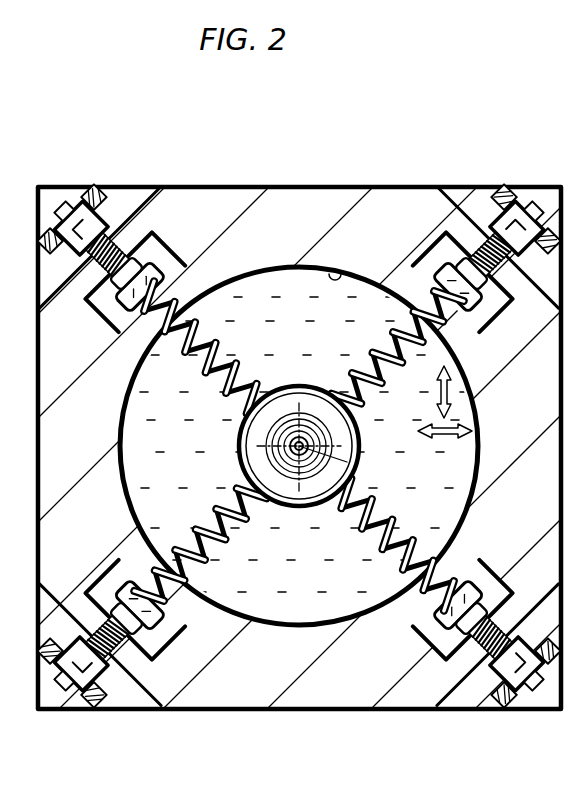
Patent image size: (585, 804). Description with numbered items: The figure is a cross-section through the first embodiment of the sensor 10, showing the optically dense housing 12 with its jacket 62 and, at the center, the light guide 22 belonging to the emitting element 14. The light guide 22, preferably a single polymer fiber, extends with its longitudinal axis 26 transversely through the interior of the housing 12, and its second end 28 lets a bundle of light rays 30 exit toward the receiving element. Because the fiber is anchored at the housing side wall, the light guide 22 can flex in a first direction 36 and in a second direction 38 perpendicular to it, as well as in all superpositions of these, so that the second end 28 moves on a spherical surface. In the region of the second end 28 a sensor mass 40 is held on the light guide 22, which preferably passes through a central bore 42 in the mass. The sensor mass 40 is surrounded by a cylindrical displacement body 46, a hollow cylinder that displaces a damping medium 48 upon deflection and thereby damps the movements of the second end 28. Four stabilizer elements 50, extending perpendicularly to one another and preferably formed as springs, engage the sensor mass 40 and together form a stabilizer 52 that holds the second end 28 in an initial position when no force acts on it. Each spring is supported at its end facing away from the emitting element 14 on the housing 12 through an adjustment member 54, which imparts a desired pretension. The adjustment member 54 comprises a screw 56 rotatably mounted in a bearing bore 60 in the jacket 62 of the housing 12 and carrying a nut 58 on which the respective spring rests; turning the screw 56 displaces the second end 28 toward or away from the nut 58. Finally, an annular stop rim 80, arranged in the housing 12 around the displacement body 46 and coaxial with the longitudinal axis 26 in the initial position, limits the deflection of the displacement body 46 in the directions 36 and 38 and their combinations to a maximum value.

The sensor 10 is at (362, 147).
The housing 12 is at (453, 170).
The emitting element 14 is at (292, 513).
The light guide 22 is at (347, 462).
The longitudinal axis 26 is at (243, 438).
The second end 28 is at (312, 392).
The bundle of light rays 30 is at (290, 452).
The first direction 36 is at (445, 436).
The second direction 38 is at (452, 390).
The sensor mass 40 is at (294, 388).
The central bore 42 is at (292, 477).
The displacement body 46 is at (246, 424).
The damping medium 48 is at (150, 520).
The stabilizer elements 50 is at (222, 345).
The stabilizer 52 is at (381, 570).
The adjustment member 54 is at (104, 184).
The screw 56 is at (130, 262).
The nut 58 is at (175, 282).
The bearing bore 60 is at (62, 188).
The jacket 62 is at (283, 652).
The stop rim 80 is at (335, 268).